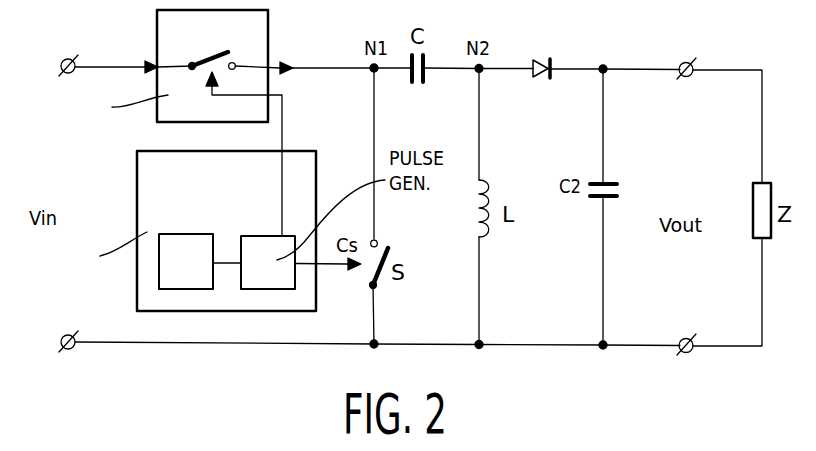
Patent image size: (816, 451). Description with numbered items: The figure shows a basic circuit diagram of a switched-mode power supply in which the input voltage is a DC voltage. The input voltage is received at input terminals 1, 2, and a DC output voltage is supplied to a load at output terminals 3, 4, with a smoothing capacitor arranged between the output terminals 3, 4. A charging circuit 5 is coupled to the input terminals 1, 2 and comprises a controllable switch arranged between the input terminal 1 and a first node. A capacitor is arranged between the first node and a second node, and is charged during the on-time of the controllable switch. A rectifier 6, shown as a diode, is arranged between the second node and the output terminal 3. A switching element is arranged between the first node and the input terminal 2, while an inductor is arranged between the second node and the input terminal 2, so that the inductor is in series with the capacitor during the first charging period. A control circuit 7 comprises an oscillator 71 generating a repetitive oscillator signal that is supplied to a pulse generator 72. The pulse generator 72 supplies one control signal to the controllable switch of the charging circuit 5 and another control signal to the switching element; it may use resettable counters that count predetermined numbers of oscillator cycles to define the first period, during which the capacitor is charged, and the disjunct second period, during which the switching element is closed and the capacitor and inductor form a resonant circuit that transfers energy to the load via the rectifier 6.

The input terminal 1 is at (62, 64).
The input terminal 2 is at (60, 340).
The output terminal 3 is at (685, 61).
The output terminal 4 is at (684, 337).
The charging circuit 5 is at (165, 28).
The rectifier 6 is at (539, 60).
The control circuit 7 is at (188, 231).
The oscillator 71 is at (182, 238).
The pulse generator 72 is at (258, 240).